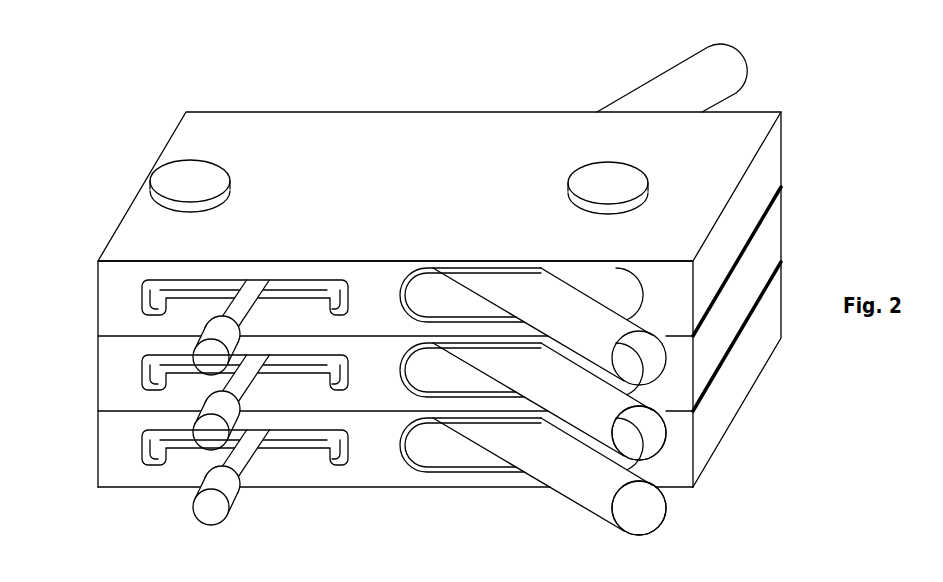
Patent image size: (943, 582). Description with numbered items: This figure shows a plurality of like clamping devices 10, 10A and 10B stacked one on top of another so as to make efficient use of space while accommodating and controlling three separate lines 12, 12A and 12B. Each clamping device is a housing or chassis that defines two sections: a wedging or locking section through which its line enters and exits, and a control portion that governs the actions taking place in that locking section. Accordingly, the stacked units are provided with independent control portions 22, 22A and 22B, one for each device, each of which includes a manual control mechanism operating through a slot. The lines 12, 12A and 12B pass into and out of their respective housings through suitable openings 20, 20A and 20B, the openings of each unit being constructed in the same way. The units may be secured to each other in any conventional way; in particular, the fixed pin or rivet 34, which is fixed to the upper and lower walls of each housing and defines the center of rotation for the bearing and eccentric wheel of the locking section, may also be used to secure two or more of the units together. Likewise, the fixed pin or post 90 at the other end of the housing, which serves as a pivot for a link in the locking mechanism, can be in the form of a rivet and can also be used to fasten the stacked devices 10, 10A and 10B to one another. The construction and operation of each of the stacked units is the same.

The clamping device 10 is at (793, 142).
The clamping device 10A is at (796, 212).
The clamping device 10B is at (793, 297).
The line 12 is at (692, 77).
The line 12A is at (645, 437).
The line 12B is at (645, 513).
The openings 20 is at (412, 293).
The openings 20A is at (427, 400).
The openings 20B is at (415, 452).
The control portion 22 is at (90, 302).
The control portion 22A is at (90, 370).
The control portion 22B is at (90, 448).
The fixed pin or rivet 34 is at (613, 178).
The fixed pin or post 90 is at (183, 175).